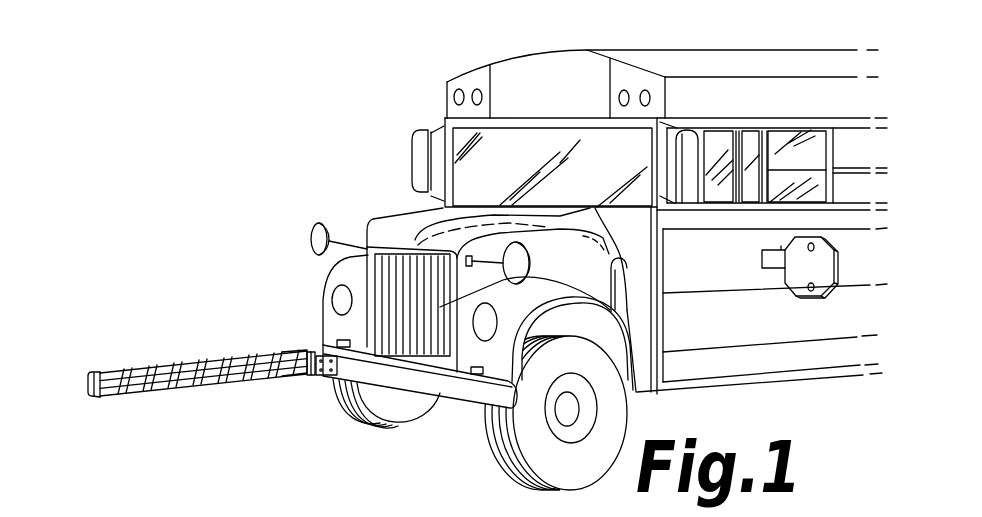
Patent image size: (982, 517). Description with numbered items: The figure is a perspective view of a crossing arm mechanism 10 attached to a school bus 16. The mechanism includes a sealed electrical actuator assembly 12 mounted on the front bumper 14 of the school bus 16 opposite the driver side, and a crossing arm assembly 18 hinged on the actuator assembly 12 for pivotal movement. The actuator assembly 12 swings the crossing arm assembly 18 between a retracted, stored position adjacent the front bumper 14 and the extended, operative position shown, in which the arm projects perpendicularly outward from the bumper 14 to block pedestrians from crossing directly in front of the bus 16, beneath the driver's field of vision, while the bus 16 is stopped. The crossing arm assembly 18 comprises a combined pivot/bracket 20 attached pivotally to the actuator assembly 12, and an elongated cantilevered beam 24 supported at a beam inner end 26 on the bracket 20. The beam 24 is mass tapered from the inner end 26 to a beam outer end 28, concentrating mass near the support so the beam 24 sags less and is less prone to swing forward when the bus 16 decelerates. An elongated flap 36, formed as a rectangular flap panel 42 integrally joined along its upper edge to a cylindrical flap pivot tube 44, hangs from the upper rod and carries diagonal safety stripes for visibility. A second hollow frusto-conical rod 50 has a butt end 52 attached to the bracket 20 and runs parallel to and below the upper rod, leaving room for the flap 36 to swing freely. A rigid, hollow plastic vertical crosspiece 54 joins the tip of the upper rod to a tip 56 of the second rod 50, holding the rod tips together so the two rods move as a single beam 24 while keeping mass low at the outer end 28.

The crossing arm mechanism 10 is at (326, 390).
The sealed electrical actuator assembly 12 is at (323, 331).
The front bumper 14 is at (483, 398).
The school bus 16 is at (735, 50).
The crossing arm assembly 18 is at (113, 360).
The combined pivot/bracket 20 is at (304, 386).
The elongated cantilevered beam 24 is at (144, 408).
The beam inner end 26 is at (287, 352).
The beam outer end 28 is at (88, 386).
The elongated flap 36 is at (165, 355).
The rectangular flap panel 42 is at (232, 347).
The cylindrical flap pivot tube 44 is at (236, 328).
The second rod 50 is at (126, 408).
The butt end 52 is at (283, 375).
The vertical crosspiece 54 is at (88, 378).
The tip of second rod 56 is at (92, 396).